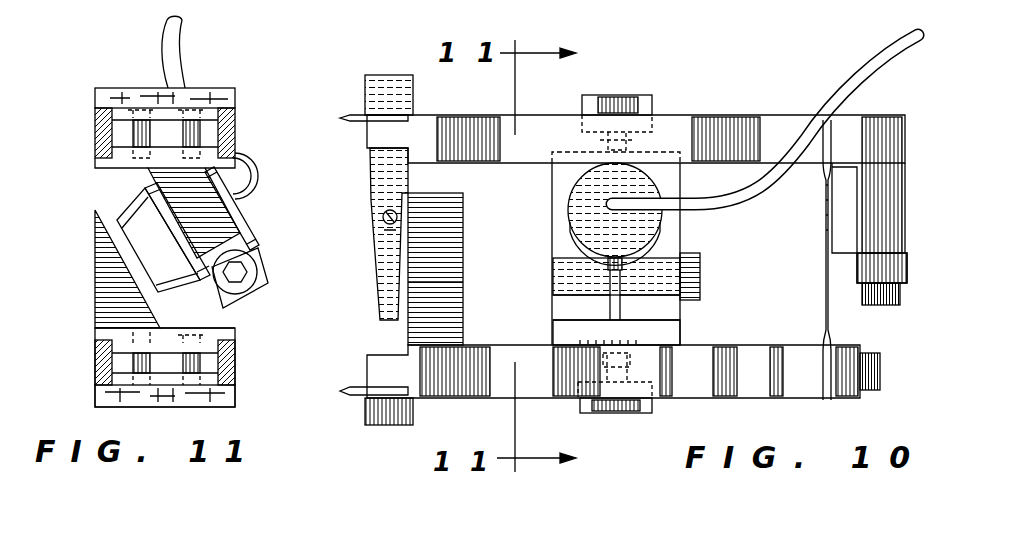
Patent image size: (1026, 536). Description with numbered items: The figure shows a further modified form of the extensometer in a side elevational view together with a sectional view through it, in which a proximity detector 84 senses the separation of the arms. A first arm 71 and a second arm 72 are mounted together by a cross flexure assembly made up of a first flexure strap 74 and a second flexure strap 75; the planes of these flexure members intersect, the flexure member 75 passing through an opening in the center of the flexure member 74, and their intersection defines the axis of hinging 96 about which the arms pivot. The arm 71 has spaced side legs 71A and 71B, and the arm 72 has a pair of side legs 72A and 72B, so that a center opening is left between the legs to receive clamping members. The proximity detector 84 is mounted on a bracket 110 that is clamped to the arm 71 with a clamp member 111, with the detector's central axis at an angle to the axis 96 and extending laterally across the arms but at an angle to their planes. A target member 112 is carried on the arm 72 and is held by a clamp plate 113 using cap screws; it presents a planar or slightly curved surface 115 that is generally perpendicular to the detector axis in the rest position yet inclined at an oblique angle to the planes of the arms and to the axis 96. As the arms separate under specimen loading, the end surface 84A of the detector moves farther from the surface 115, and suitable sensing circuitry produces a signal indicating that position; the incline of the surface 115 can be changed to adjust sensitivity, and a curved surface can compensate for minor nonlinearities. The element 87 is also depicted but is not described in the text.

In FIG. 10, the first arm 71 is at (707, 130).
In FIG. 11, the side leg 71A is at (96, 128).
In FIG. 11, the side leg 71B is at (234, 128).
In FIG. 10, the second arm 72 is at (493, 372).
In FIG. 11, the side leg 72A is at (97, 364).
In FIG. 11, the side leg 72B is at (232, 360).
In FIG. 10, the first flexure strap 74 is at (828, 133).
In FIG. 10, the second flexure strap 75 is at (840, 260).
In FIG. 11, the proximity detector 84 is at (249, 247).
In FIG. 10, the proximity detector 84 is at (583, 202).
In FIG. 11, the end surface 84A is at (155, 280).
In FIG. 10, the pivot arm 87 is at (380, 181).
In FIG. 10, the axis of hinging 96 is at (823, 248).
In FIG. 11, the bracket 110 is at (207, 220).
In FIG. 10, the bracket 110 is at (563, 250).
In FIG. 11, the clamp member 111 is at (220, 89).
In FIG. 10, the clamp member 111 is at (626, 97).
In FIG. 11, the target member 112 is at (95, 256).
In FIG. 10, the target member 112 is at (558, 327).
In FIG. 11, the clamp plate 113 is at (200, 408).
In FIG. 10, the clamp plate 113 is at (600, 410).
In FIG. 11, the target surface 115 is at (106, 222).